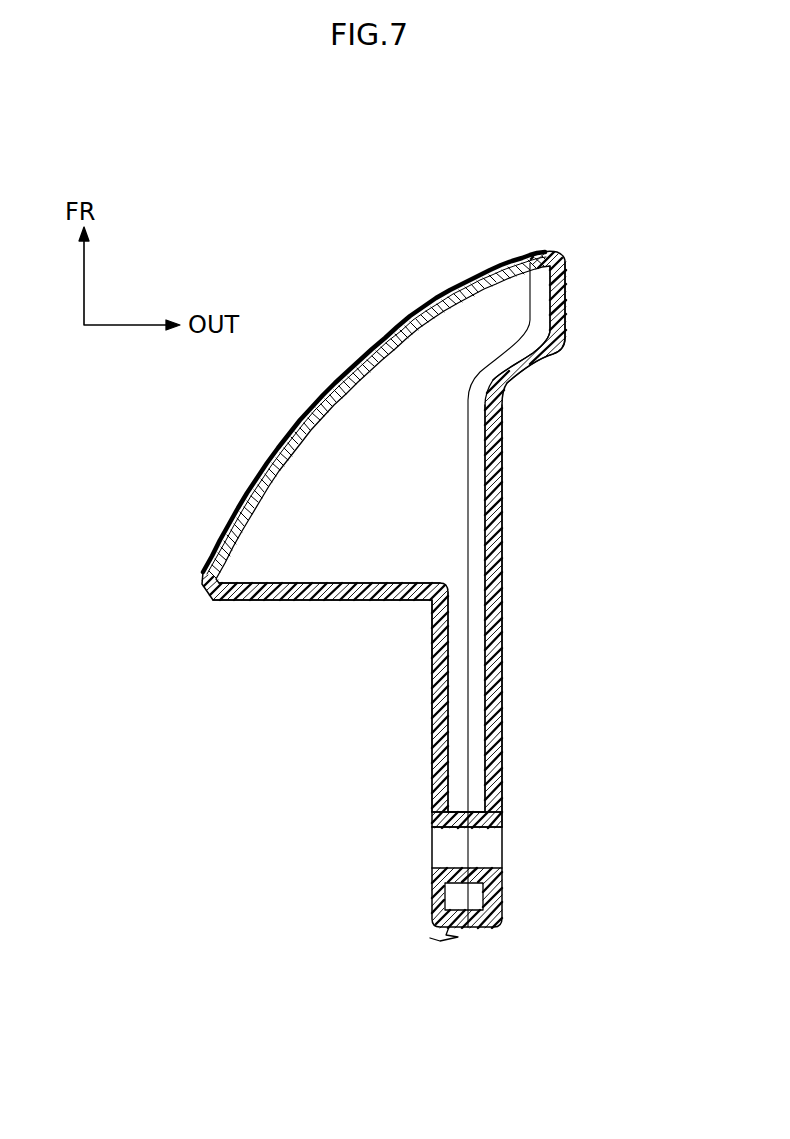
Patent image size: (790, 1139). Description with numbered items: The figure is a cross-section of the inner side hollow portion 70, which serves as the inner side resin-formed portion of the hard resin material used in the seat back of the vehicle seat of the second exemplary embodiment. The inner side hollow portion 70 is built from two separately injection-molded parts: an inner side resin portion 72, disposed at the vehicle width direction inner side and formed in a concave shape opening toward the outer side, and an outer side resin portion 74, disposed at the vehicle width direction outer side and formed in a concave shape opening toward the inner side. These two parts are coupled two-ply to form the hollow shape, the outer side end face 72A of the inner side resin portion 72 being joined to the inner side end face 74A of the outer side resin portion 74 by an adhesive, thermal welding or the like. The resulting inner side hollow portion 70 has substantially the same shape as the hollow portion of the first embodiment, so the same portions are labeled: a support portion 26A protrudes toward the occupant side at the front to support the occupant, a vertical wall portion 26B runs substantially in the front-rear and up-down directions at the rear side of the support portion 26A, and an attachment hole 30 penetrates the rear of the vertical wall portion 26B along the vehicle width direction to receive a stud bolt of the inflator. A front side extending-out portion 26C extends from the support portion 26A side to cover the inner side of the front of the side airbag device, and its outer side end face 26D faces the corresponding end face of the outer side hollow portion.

The inner side hollow portion 70 is at (546, 551).
The inner side resin portion 72 is at (354, 361).
The outer side end face 72A is at (483, 441).
The support portion 26A is at (272, 462).
The vertical wall portion 26B is at (432, 712).
The front side extending-out portion 26C is at (533, 357).
The outer side end face 26D is at (553, 297).
The outer side resin portion 74 is at (507, 420).
The inner side end face 74A is at (470, 493).
The attachment hole 30 is at (478, 830).